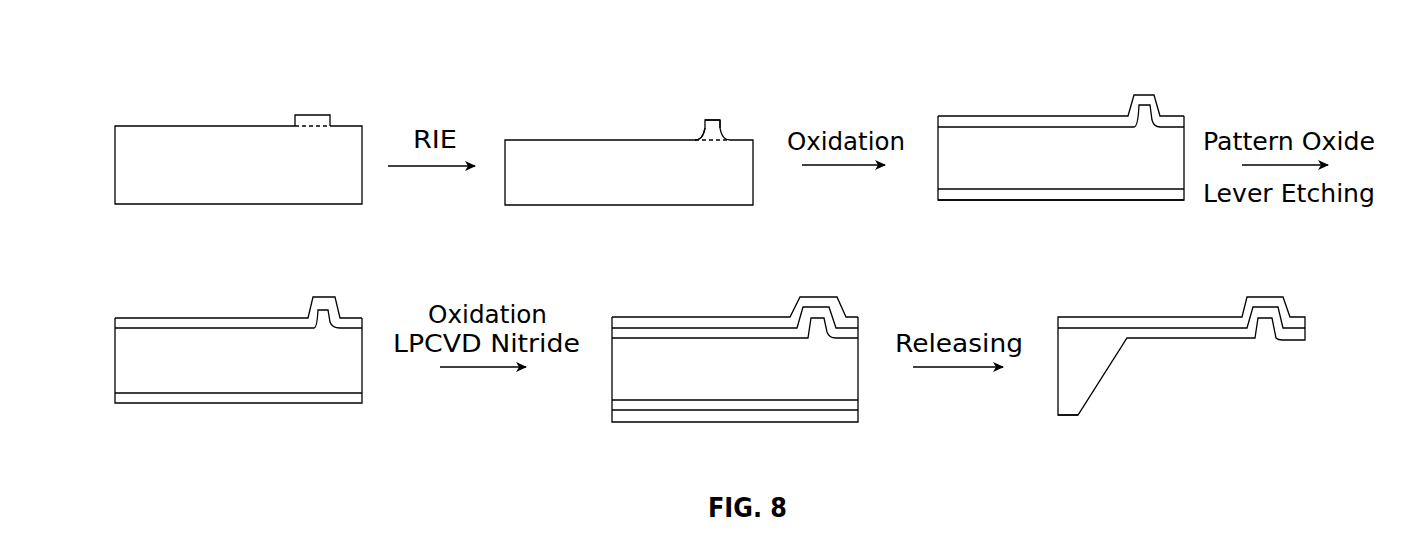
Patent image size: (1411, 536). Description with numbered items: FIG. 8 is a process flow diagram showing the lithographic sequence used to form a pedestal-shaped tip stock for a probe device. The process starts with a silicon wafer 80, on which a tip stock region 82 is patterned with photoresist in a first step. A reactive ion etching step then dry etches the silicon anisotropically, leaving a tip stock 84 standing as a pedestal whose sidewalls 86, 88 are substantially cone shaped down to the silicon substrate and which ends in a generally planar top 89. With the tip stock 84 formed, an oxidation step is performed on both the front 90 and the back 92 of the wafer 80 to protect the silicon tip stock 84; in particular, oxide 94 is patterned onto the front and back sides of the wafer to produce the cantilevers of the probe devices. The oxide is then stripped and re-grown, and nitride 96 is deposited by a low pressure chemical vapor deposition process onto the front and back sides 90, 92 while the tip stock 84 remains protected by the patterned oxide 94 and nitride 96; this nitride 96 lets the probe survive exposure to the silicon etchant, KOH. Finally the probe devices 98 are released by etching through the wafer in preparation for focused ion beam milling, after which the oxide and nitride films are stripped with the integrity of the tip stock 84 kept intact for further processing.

The front side 90 is at (139, 77).
The silicon wafer 80 is at (115, 172).
The tip stock region 82 is at (313, 115).
The tip stock 84 is at (702, 125).
The sidewall 86 is at (697, 142).
The sidewall 88 is at (726, 138).
The generally planar top 89 is at (714, 120).
The oxide 94 is at (970, 121).
The back side 92 is at (1066, 206).
The nitride 96 is at (668, 320).
The probe device 98 is at (1308, 349).